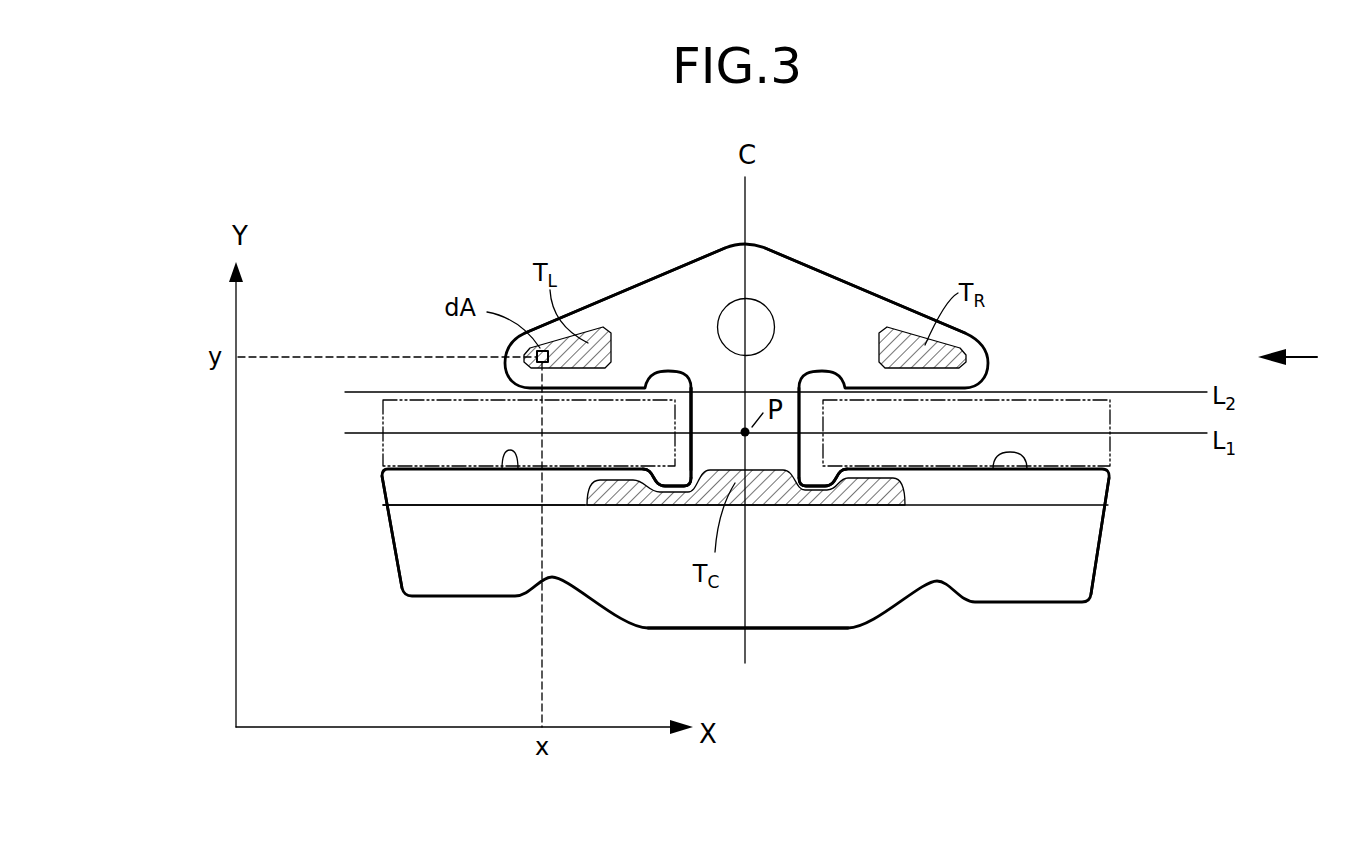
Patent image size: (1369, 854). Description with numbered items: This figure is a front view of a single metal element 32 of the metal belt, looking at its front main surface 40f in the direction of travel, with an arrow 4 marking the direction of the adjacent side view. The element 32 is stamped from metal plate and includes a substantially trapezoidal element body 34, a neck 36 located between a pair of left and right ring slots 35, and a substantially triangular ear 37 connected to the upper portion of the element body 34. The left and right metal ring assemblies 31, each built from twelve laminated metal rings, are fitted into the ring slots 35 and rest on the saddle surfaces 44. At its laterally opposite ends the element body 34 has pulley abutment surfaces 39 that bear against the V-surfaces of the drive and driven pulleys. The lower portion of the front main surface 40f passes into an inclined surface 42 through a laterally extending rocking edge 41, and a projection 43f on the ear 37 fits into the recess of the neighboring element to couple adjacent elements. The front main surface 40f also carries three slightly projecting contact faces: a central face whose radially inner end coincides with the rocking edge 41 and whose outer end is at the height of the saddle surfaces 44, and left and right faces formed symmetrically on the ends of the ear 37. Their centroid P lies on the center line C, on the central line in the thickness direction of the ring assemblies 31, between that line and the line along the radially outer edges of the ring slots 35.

The viewing direction of FIG. 4 is at (1303, 360).
The metal ring assembly 31 is at (383, 438).
The metal element 32 is at (801, 242).
The element body 34 is at (1027, 575).
The ring slot 35 is at (686, 452).
The neck 36 is at (705, 410).
The ear 37 is at (857, 307).
The pulley abutment surface 39 is at (386, 512).
The front main surface 40f is at (683, 293).
The rocking edge 41 is at (460, 505).
The inclined surface 42 is at (814, 612).
The projection 43f is at (763, 320).
The saddle surface 44 is at (518, 477).